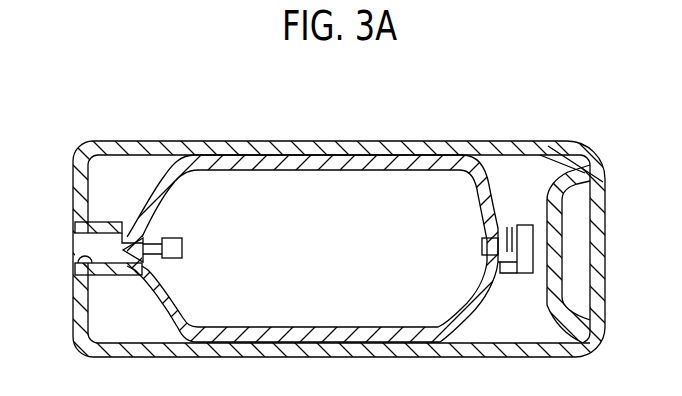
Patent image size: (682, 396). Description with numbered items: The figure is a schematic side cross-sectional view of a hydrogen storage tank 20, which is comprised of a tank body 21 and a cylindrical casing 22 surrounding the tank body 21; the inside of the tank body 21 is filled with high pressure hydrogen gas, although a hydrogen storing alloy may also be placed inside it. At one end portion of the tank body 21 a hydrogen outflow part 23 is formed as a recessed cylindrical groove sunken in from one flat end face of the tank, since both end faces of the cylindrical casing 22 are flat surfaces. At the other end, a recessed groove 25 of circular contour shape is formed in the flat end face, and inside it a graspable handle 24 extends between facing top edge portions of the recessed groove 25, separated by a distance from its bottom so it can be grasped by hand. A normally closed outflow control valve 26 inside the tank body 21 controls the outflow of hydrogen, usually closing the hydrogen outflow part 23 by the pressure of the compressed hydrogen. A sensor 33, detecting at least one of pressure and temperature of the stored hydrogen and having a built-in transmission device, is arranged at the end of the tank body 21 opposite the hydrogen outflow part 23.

The hydrogen storage tank 20 is at (341, 198).
The tank body 21 is at (509, 225).
The cylindrical casing 22 is at (227, 141).
The hydrogen outflow part 23 is at (76, 262).
The handle 24 is at (597, 228).
The recessed groove 25 is at (553, 272).
The outflow control valve 26 is at (175, 247).
The sensor 33 is at (513, 223).